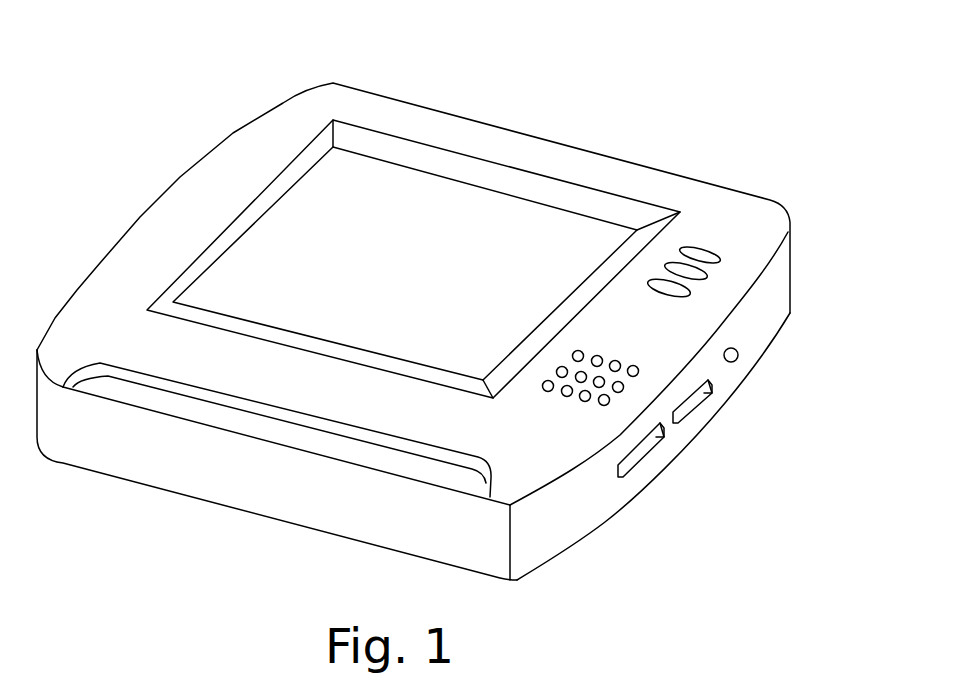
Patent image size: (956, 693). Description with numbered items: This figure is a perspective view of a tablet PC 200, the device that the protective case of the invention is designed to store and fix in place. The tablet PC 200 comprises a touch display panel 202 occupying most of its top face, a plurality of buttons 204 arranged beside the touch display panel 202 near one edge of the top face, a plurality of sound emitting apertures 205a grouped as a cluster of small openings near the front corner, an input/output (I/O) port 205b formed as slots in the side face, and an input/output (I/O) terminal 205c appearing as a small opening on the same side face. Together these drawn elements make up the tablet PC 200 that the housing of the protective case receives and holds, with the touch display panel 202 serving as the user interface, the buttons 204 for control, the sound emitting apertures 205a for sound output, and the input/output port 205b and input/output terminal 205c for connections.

The tablet PC 200 is at (638, 108).
The touch display panel 202 is at (290, 223).
The buttons 204 is at (720, 258).
The sound emitting apertures 205a is at (584, 402).
The input/output (I/O) port 205b is at (634, 457).
The input/output (I/O) terminal 205c is at (738, 360).